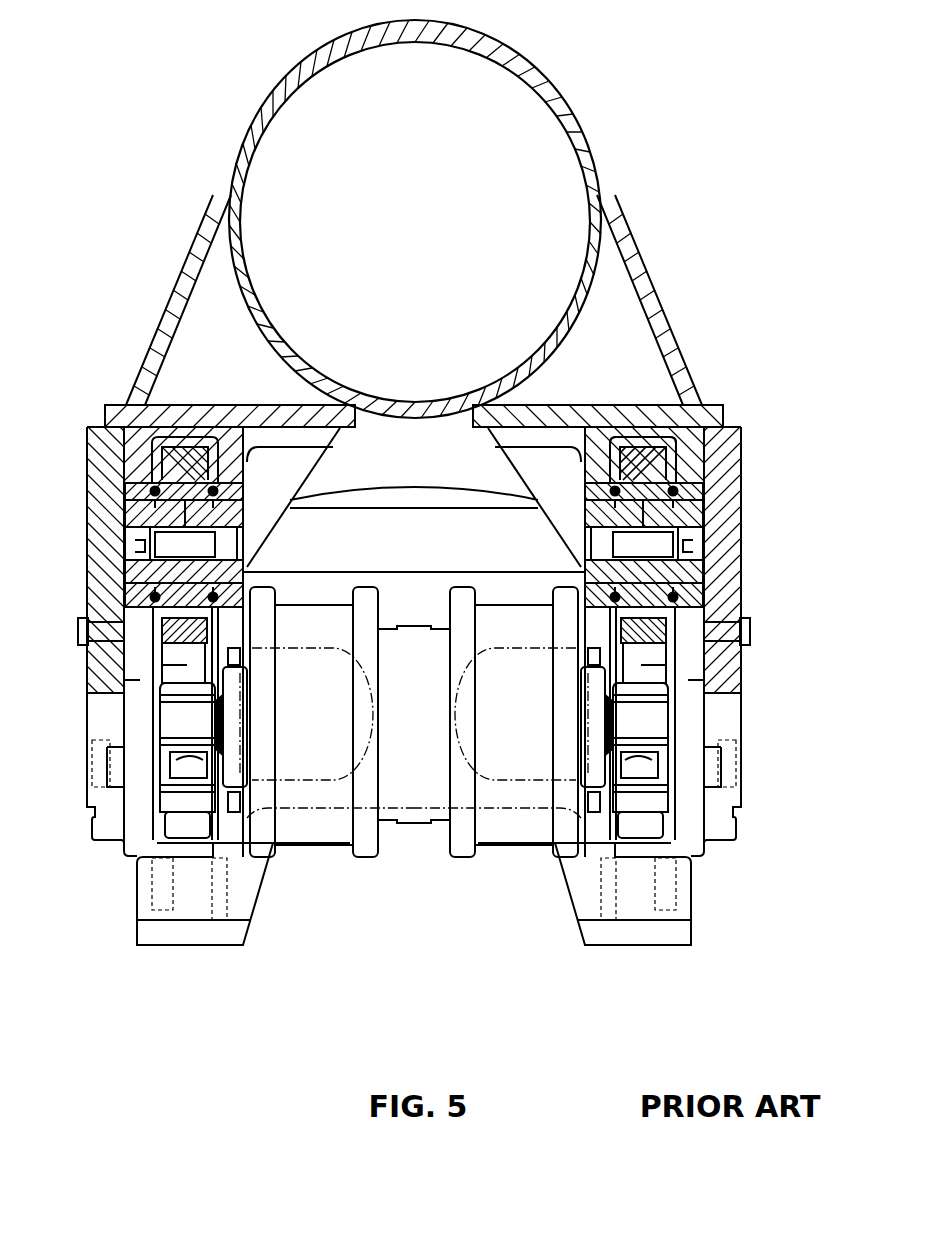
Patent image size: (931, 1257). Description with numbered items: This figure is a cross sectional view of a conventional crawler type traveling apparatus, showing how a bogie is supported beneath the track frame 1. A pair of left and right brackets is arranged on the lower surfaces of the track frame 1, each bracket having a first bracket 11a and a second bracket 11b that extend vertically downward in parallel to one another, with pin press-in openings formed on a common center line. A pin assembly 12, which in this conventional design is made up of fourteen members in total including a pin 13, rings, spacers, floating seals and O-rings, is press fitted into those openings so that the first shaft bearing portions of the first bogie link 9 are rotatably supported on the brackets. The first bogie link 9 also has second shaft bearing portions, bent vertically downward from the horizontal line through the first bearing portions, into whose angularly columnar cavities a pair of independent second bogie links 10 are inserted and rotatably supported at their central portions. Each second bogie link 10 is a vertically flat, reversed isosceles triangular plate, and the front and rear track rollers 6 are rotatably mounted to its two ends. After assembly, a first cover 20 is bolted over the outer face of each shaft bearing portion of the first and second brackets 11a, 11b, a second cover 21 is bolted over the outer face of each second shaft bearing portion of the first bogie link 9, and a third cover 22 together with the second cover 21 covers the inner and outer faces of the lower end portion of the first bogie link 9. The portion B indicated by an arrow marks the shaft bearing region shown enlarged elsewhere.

The track frame 1 is at (632, 234).
The track roller 6 is at (325, 845).
The first bogie link 9 is at (190, 445).
The second bogie link 10 is at (180, 663).
The first bracket 11a is at (88, 427).
The second bracket 11b is at (722, 437).
The pin assembly 12 is at (117, 564).
The pin 13 is at (120, 496).
The first cover 20 is at (87, 586).
The second cover 21 is at (733, 715).
The third cover 22 is at (635, 937).
The portion B is at (683, 470).